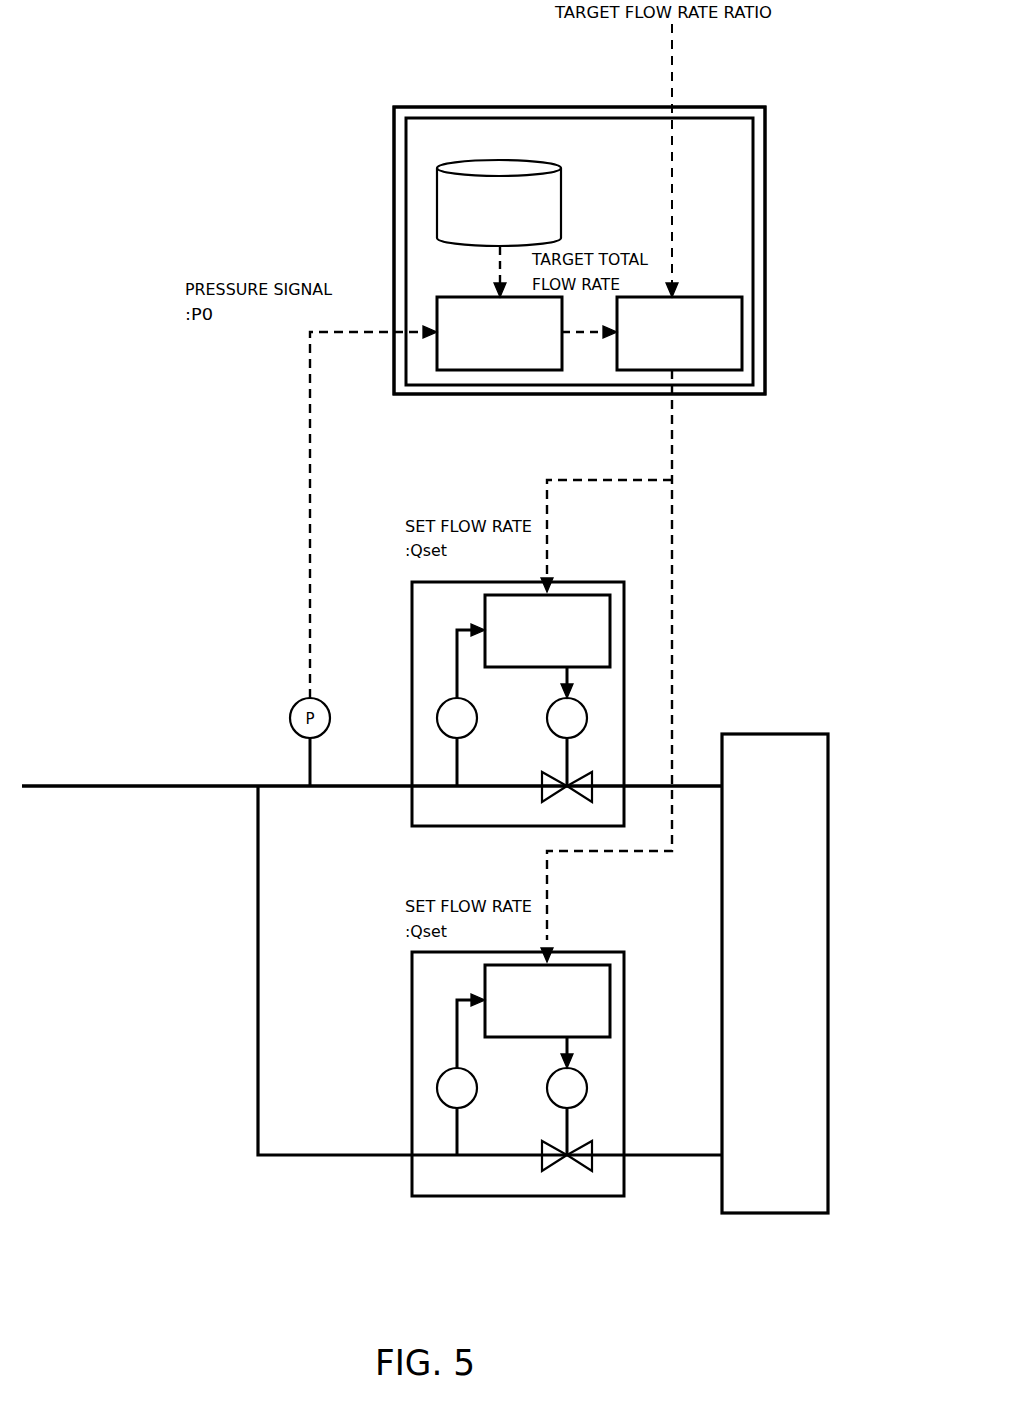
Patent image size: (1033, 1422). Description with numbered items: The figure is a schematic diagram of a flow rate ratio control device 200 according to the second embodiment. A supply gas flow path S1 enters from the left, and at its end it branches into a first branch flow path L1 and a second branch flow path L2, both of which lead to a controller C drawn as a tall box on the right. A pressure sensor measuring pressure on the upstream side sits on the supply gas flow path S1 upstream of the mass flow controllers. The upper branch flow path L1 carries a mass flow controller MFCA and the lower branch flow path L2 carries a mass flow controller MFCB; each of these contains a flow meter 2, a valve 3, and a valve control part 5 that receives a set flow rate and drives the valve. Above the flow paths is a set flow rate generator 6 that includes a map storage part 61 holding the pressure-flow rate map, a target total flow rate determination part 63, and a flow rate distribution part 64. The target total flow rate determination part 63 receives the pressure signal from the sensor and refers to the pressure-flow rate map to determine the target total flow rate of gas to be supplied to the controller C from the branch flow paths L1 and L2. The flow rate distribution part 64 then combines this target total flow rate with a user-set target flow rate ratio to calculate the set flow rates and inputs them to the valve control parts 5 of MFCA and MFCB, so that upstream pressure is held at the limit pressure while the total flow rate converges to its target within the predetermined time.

The flow rate ratio control device 200 is at (776, 94).
The controller C is at (775, 734).
The set flow rate generator 6 is at (405, 158).
The map storage part 61 is at (437, 205).
The target total flow rate determination part 63 is at (437, 315).
The flow rate distribution part 64 is at (727, 297).
The mass flow controller MFCA is at (588, 582).
The mass flow controller MFCB is at (593, 952).
The valve control part 5 is at (610, 628).
The flow rate sensor 2 is at (430, 688).
The valve 3 is at (615, 698).
The supply gas flow path S1 is at (125, 784).
The first branch flow path L1 is at (340, 787).
The second branch flow path L2 is at (340, 1156).